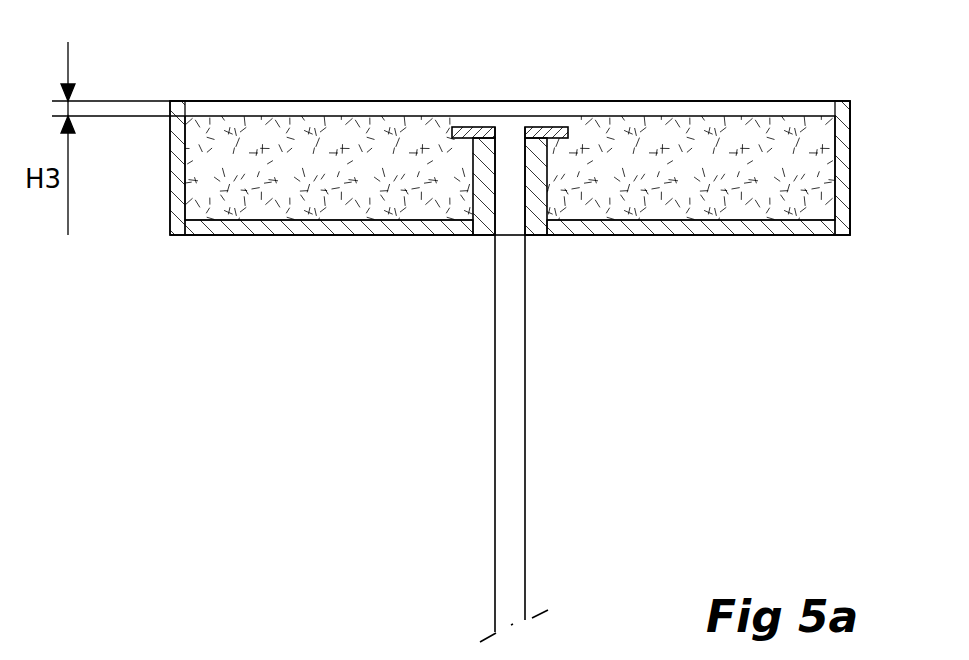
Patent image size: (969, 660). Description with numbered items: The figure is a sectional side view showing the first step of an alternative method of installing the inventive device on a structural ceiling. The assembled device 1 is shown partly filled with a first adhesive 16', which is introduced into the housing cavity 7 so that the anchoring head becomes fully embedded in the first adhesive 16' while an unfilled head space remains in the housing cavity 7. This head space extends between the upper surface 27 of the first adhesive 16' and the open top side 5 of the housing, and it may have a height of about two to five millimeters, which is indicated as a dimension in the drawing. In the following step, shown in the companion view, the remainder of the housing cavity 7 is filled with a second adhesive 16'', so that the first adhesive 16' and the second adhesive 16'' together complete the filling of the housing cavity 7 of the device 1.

The assembled device 1 is at (290, 388).
The open top side 5 is at (396, 100).
The housing cavity 7 is at (626, 131).
The first adhesive 16' is at (611, 268).
The second adhesive 16'' is at (442, 393).
The upper surface of the first adhesive 27 is at (328, 115).